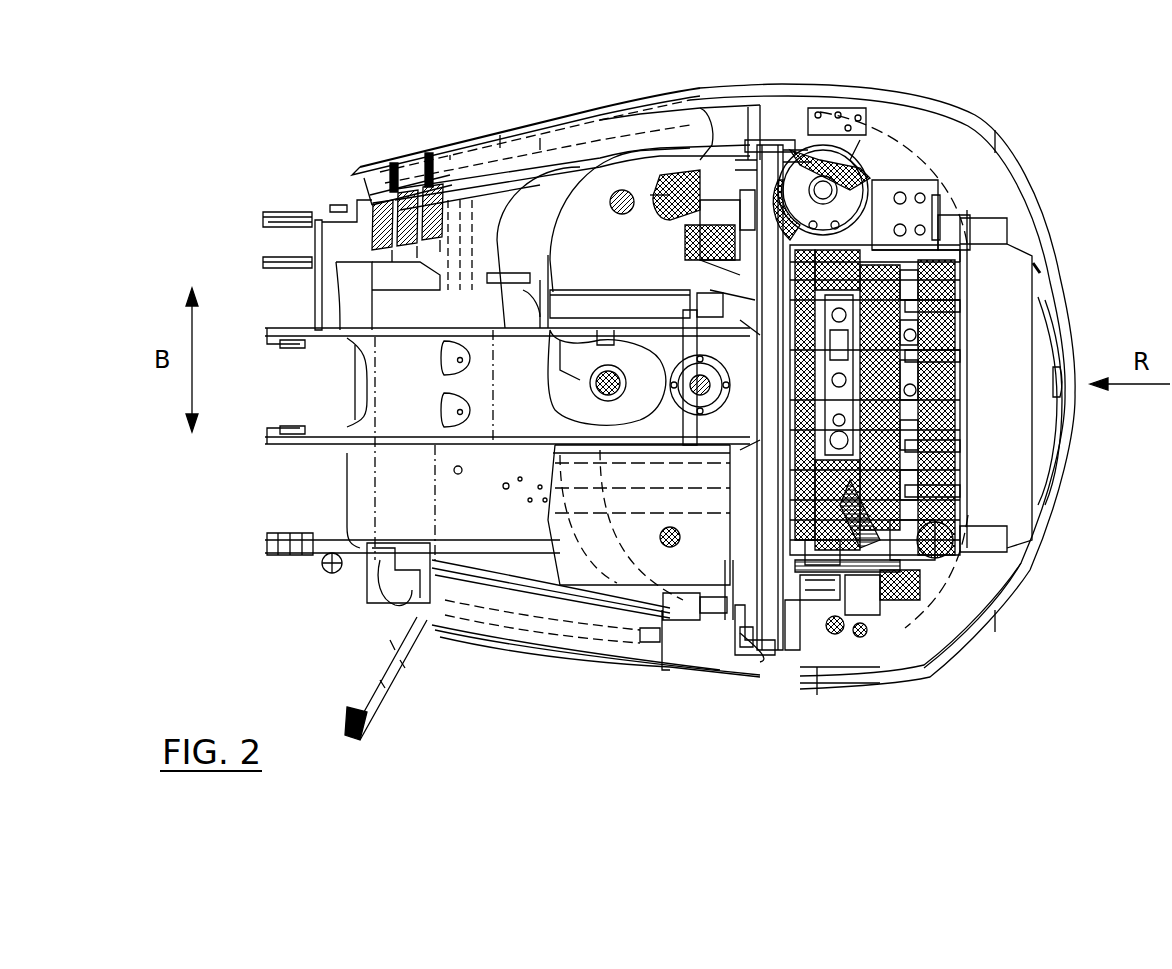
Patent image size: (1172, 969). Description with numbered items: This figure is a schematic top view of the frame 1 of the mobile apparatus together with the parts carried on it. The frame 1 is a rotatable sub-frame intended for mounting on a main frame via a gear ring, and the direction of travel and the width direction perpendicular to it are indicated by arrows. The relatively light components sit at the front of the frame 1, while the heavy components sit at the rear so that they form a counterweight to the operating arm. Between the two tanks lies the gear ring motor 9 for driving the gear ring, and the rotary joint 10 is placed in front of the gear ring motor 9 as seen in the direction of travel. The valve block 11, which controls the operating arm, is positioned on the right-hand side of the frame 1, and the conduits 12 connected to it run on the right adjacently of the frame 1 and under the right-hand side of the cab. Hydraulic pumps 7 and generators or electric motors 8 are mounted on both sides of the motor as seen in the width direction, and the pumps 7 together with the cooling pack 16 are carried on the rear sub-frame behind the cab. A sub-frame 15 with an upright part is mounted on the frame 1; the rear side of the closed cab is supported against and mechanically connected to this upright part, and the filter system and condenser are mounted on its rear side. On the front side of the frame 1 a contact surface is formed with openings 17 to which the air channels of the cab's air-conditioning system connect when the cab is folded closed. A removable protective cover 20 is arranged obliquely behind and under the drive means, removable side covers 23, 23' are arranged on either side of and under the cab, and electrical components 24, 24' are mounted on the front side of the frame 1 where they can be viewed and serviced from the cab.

The frame 1 is at (378, 485).
The hydraulic pumps 7 is at (860, 147).
The generators or electric motors 8 is at (870, 158).
The gear ring motor 9 is at (663, 407).
The rotary joint 10 is at (548, 410).
The valve block 11 is at (812, 118).
The conduits 12 is at (622, 114).
The sub-frame 15 is at (767, 620).
The cooling pack 16 is at (1020, 497).
The openings 17 is at (450, 415).
The protective cover 20 is at (990, 575).
The side covers 23 is at (596, 661).
The side covers 23' is at (551, 166).
The electrical components 24 is at (360, 641).
The electrical components 24' is at (385, 180).